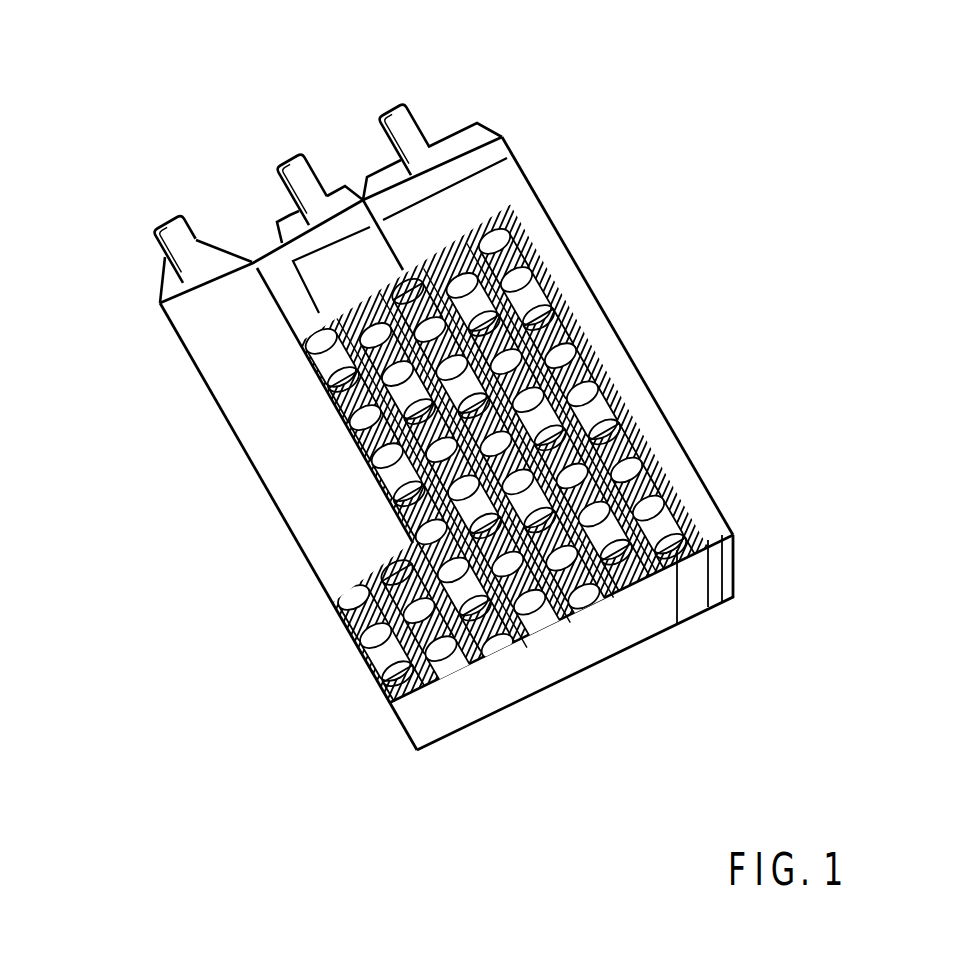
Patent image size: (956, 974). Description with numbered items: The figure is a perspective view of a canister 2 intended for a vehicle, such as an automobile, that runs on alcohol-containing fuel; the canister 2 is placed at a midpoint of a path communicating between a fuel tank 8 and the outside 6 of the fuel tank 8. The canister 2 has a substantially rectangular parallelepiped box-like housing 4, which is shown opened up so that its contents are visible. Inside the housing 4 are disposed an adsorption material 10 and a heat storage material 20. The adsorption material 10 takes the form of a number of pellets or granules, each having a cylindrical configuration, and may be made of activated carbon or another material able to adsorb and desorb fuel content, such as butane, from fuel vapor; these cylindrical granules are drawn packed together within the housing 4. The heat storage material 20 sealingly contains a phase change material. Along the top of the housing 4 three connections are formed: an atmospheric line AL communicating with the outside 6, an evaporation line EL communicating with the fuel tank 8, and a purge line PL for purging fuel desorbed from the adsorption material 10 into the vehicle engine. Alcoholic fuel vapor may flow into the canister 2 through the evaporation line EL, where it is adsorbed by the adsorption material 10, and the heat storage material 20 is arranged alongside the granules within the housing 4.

The canister 2 is at (478, 487).
The housing 4 is at (702, 510).
The adsorption material 10 is at (583, 337).
The heat storage material 20 is at (615, 368).
The outside 6 is at (157, 216).
The fuel tank 8 is at (416, 110).
The atmospheric line AL is at (165, 218).
The purge line PL is at (288, 160).
The evaporation line EL is at (380, 90).